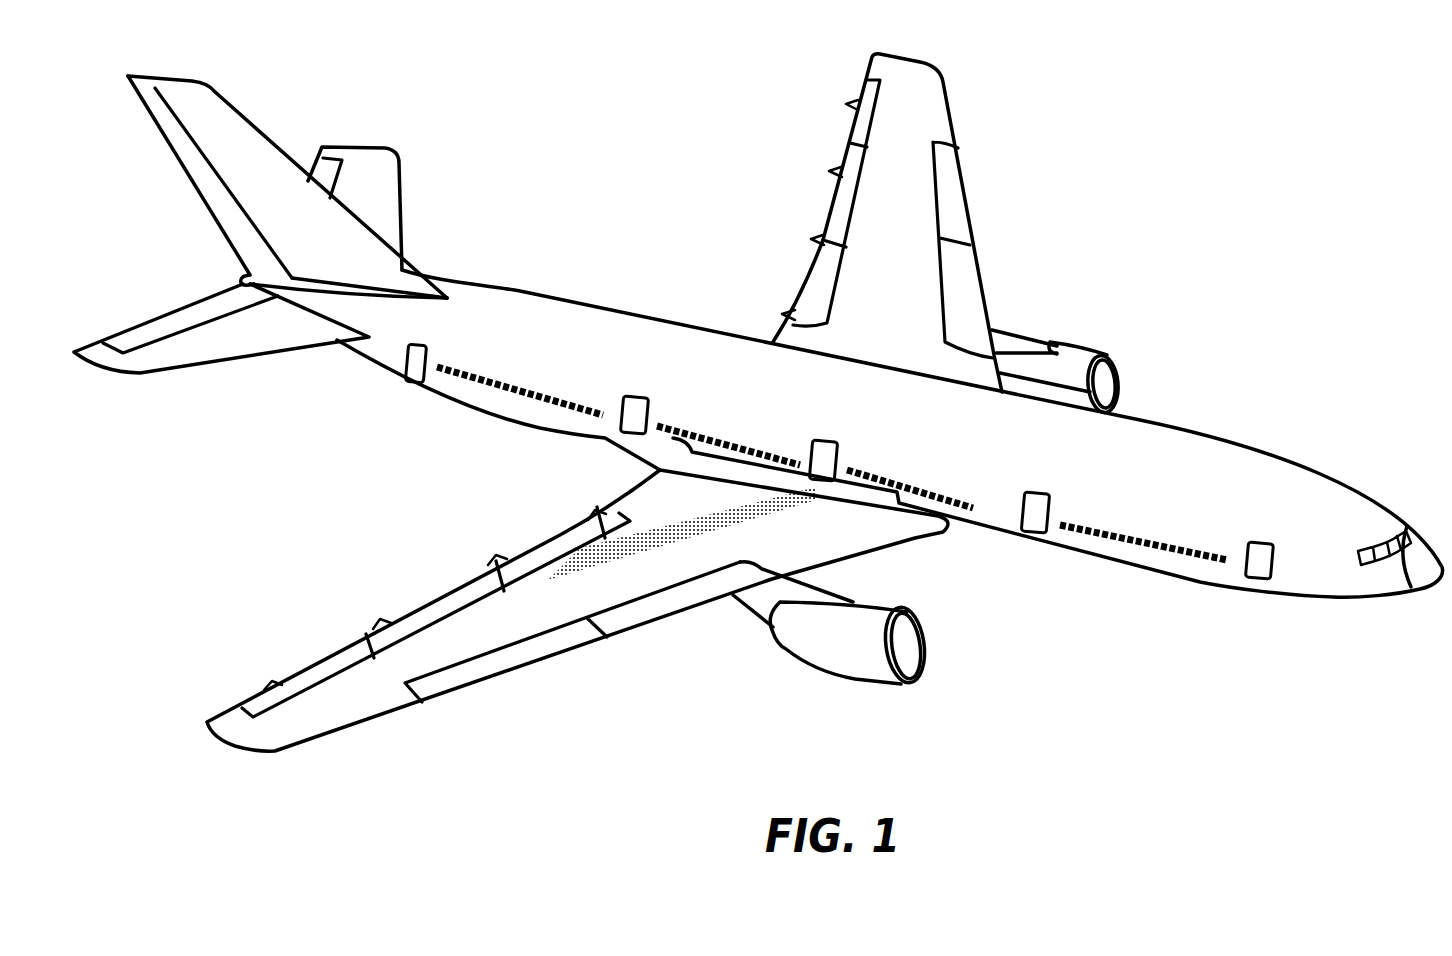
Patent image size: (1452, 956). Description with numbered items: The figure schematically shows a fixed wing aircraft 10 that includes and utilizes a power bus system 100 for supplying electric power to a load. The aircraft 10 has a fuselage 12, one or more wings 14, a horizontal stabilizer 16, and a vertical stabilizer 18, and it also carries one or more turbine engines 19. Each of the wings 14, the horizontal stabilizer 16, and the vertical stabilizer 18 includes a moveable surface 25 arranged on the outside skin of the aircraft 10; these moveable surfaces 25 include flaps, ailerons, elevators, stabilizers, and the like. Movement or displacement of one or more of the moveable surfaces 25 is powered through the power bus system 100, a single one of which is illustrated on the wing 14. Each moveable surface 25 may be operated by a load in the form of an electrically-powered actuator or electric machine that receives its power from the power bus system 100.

The fixed wing aircraft 10 is at (1235, 168).
The fuselage 12 is at (570, 300).
The wing 14 is at (952, 113).
The horizontal stabilizer 16 is at (400, 211).
The vertical stabilizer 18 is at (228, 103).
The turbine engine 19 is at (866, 688).
The moveable surface 25 is at (208, 175).
The power bus system 100 is at (680, 530).